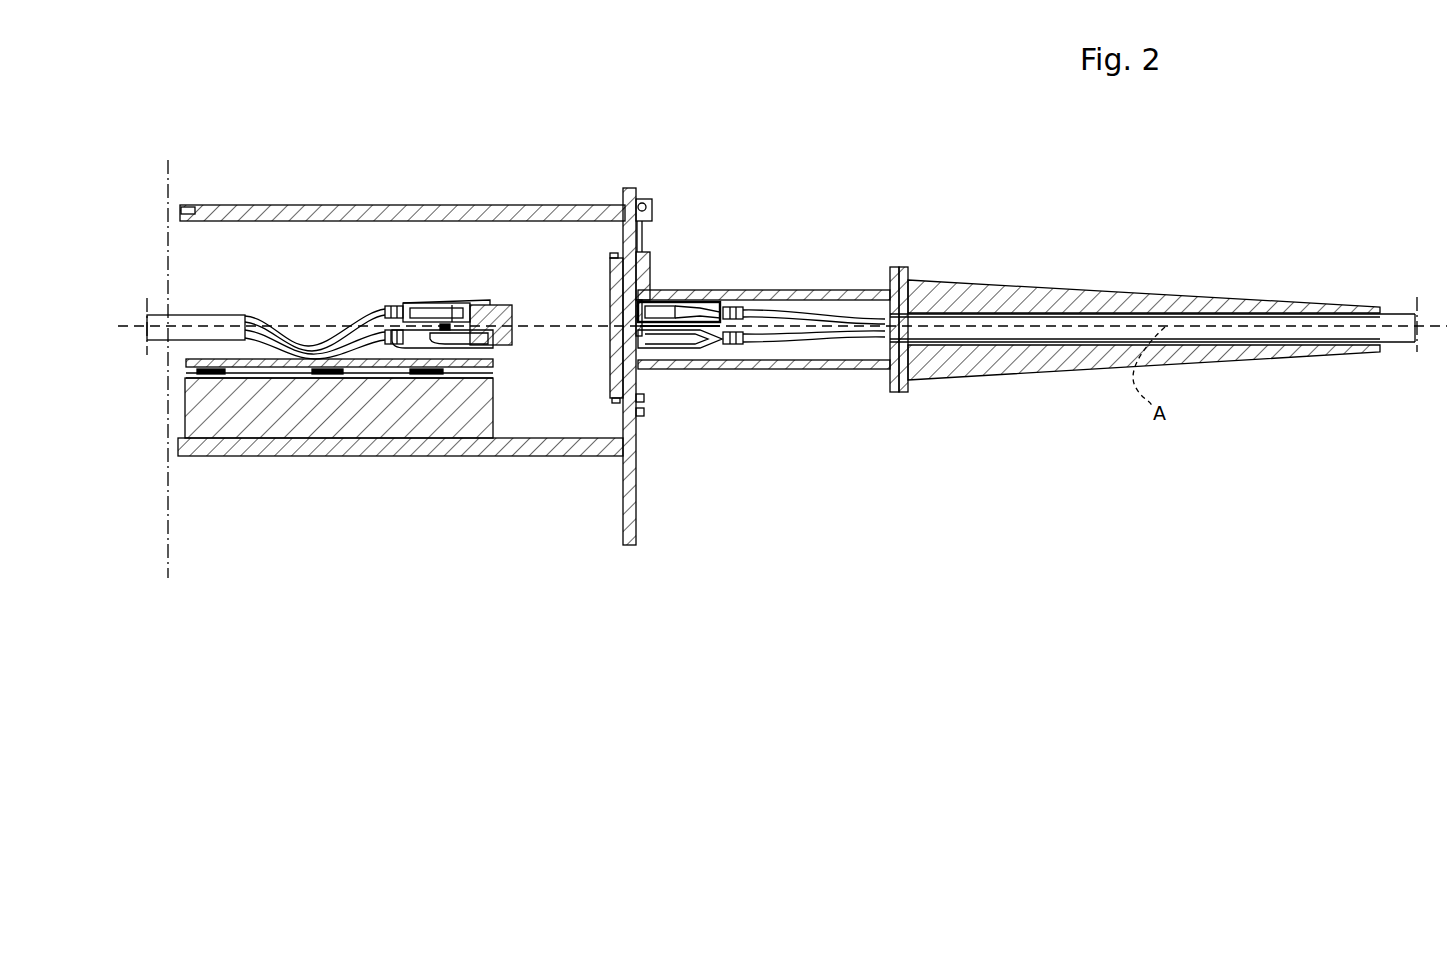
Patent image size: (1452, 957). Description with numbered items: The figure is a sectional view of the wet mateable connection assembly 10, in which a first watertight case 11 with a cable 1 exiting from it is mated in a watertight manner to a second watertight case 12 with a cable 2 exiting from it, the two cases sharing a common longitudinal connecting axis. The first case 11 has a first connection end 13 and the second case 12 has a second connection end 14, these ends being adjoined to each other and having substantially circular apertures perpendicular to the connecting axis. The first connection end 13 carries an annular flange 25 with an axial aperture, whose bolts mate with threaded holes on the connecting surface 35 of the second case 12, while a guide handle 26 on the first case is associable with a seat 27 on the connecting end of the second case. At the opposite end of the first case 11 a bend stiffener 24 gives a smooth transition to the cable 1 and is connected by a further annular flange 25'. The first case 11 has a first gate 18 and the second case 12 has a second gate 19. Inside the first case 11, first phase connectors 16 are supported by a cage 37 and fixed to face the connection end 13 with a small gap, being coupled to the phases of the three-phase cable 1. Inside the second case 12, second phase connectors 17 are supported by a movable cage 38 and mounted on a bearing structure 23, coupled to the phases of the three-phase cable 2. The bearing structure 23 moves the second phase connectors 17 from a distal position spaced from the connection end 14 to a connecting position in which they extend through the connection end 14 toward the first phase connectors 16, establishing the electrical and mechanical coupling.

The cable 1 is at (1383, 327).
The cable 2 is at (197, 318).
The wet mateable connection assembly 10 is at (856, 125).
The first watertight case 11 is at (843, 290).
The second watertight case 12 is at (398, 207).
The first connection end 13 is at (660, 266).
The second connection end 14 is at (631, 176).
The first phase connectors 16 is at (722, 295).
The second phase connectors 17 is at (447, 280).
The first gate 18 is at (640, 374).
The second gate 19 is at (614, 322).
The bearing structure 23 is at (373, 363).
The bend stiffener 24 is at (1100, 298).
The annular flange 25 is at (705, 432).
The annular flange 25' is at (887, 358).
The guide handle 26 is at (643, 201).
The seat 27 is at (657, 213).
The connecting surface 35 is at (633, 416).
The cage 37 is at (673, 333).
The movable cage 38 is at (452, 322).